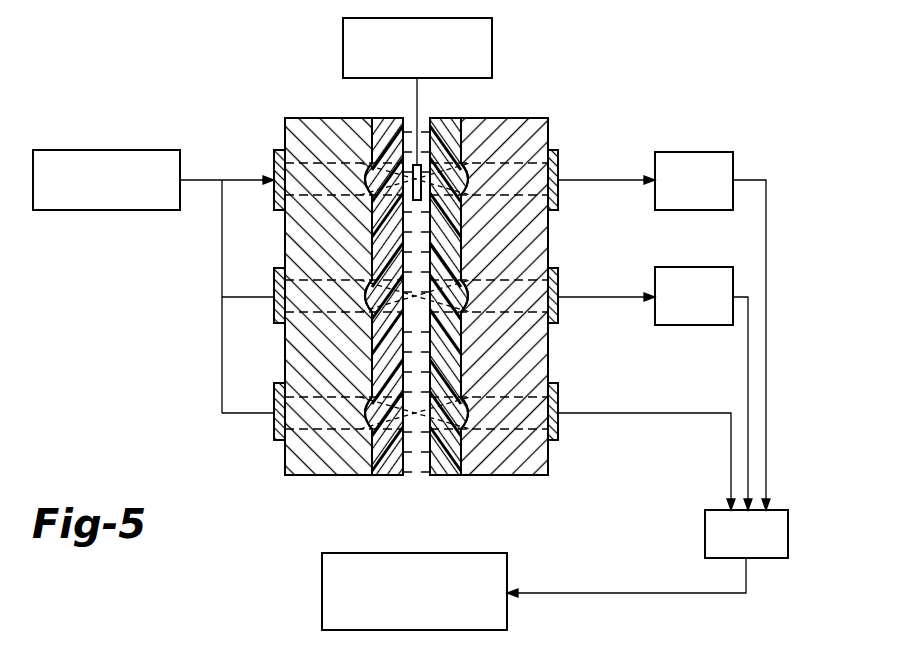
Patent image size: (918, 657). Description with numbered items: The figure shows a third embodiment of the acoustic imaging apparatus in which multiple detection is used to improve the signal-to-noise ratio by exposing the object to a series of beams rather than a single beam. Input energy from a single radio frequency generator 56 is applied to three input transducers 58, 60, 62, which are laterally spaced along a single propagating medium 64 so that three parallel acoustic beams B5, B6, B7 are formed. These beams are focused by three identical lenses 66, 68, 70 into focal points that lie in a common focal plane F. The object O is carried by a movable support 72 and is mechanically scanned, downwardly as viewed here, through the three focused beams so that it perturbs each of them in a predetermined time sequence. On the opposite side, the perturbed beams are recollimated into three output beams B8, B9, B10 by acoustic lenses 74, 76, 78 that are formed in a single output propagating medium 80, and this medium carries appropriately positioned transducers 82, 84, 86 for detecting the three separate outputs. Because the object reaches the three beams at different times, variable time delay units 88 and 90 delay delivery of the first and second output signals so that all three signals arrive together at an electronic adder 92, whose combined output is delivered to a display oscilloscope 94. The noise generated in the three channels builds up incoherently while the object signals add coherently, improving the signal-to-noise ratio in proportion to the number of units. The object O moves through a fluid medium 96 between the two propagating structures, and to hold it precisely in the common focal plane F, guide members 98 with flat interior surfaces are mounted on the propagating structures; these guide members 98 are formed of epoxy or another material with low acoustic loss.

The radio frequency generator 56 is at (60, 150).
The input transducer 58 is at (270, 162).
The input transducer 60 is at (274, 282).
The input transducer 62 is at (274, 395).
The propagating medium 64 is at (288, 457).
The lens 66 is at (367, 172).
The lens 68 is at (365, 290).
The lens 70 is at (363, 420).
The support 72 is at (492, 38).
The acoustic lens 74 is at (470, 165).
The acoustic lens 76 is at (462, 282).
The acoustic lens 78 is at (470, 415).
The output propagating medium 80 is at (548, 122).
The transducer 82 is at (556, 207).
The transducer 84 is at (557, 313).
The transducer 86 is at (555, 437).
The variable time delay unit 88 is at (733, 157).
The variable time delay unit 90 is at (718, 267).
The electronic adder 92 is at (705, 533).
The display oscilloscope 94 is at (507, 565).
The fluid medium 96 is at (413, 472).
The guide member 98 is at (381, 118).
The common focal plane F is at (414, 412).
The object O is at (432, 168).
The input beam B5 is at (318, 160).
The input beam B6 is at (303, 273).
The input beam B7 is at (302, 388).
The output beam B8 is at (548, 145).
The output beam B9 is at (550, 333).
The output beam B10 is at (548, 376).